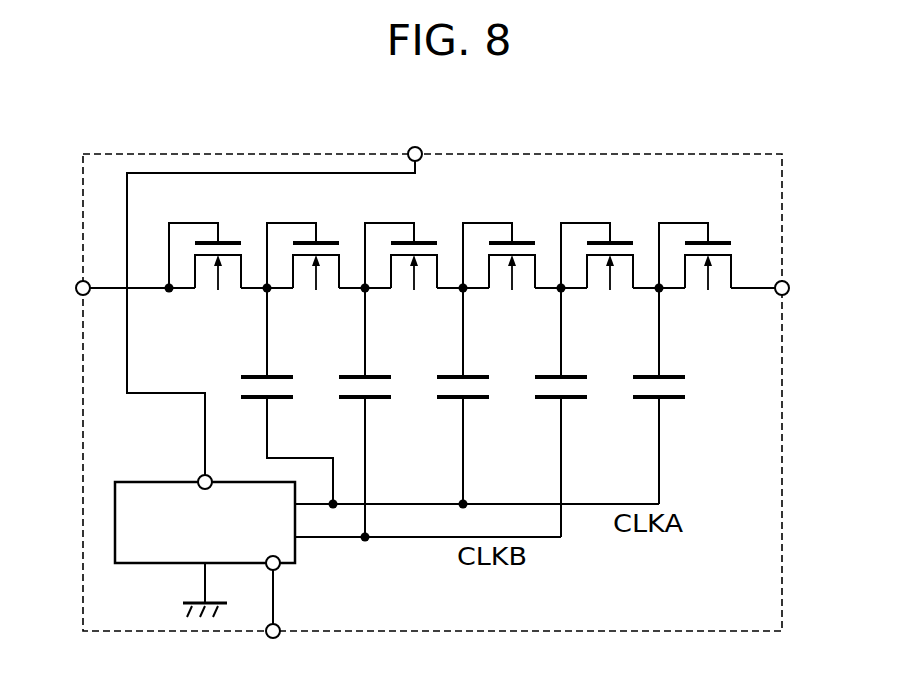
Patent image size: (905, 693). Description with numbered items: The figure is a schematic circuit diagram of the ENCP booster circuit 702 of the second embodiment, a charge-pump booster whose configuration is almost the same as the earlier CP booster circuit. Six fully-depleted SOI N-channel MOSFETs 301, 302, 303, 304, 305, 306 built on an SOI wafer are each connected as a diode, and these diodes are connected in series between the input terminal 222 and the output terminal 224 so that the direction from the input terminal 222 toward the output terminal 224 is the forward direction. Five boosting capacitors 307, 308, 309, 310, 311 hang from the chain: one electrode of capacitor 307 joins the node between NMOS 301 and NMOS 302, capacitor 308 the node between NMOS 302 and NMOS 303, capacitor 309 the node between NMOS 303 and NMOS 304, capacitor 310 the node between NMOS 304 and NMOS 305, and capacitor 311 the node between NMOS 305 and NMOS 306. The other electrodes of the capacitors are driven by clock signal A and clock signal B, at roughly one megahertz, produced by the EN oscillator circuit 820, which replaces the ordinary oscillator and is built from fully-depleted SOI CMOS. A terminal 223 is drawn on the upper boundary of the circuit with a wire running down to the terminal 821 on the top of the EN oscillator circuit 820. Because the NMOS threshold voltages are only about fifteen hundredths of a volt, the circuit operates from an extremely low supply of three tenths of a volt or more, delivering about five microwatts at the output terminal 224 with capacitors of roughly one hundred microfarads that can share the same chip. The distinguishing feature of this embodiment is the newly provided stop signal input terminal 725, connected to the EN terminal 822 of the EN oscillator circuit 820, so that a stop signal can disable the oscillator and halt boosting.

The ENCP booster circuit 702 is at (609, 152).
The input terminal 222 is at (78, 295).
The enable terminal 223 is at (411, 146).
The output terminal 224 is at (789, 292).
The FD-SOI type NMOS 301 is at (224, 242).
The FD-SOI type NMOS 302 is at (322, 242).
The FD-SOI type NMOS 303 is at (420, 242).
The FD-SOI type NMOS 304 is at (518, 242).
The FD-SOI type NMOS 305 is at (616, 242).
The FD-SOI type NMOS 306 is at (714, 242).
The boosting capacitor 307 is at (258, 375).
The boosting capacitor 308 is at (356, 375).
The boosting capacitor 309 is at (454, 375).
The boosting capacitor 310 is at (552, 375).
The boosting capacitor 311 is at (650, 375).
The EN oscillator circuit 820 is at (142, 565).
The enable input terminal of oscillator 821 is at (197, 479).
The EN terminal 822 is at (280, 565).
The stop signal input terminal 725 is at (280, 627).